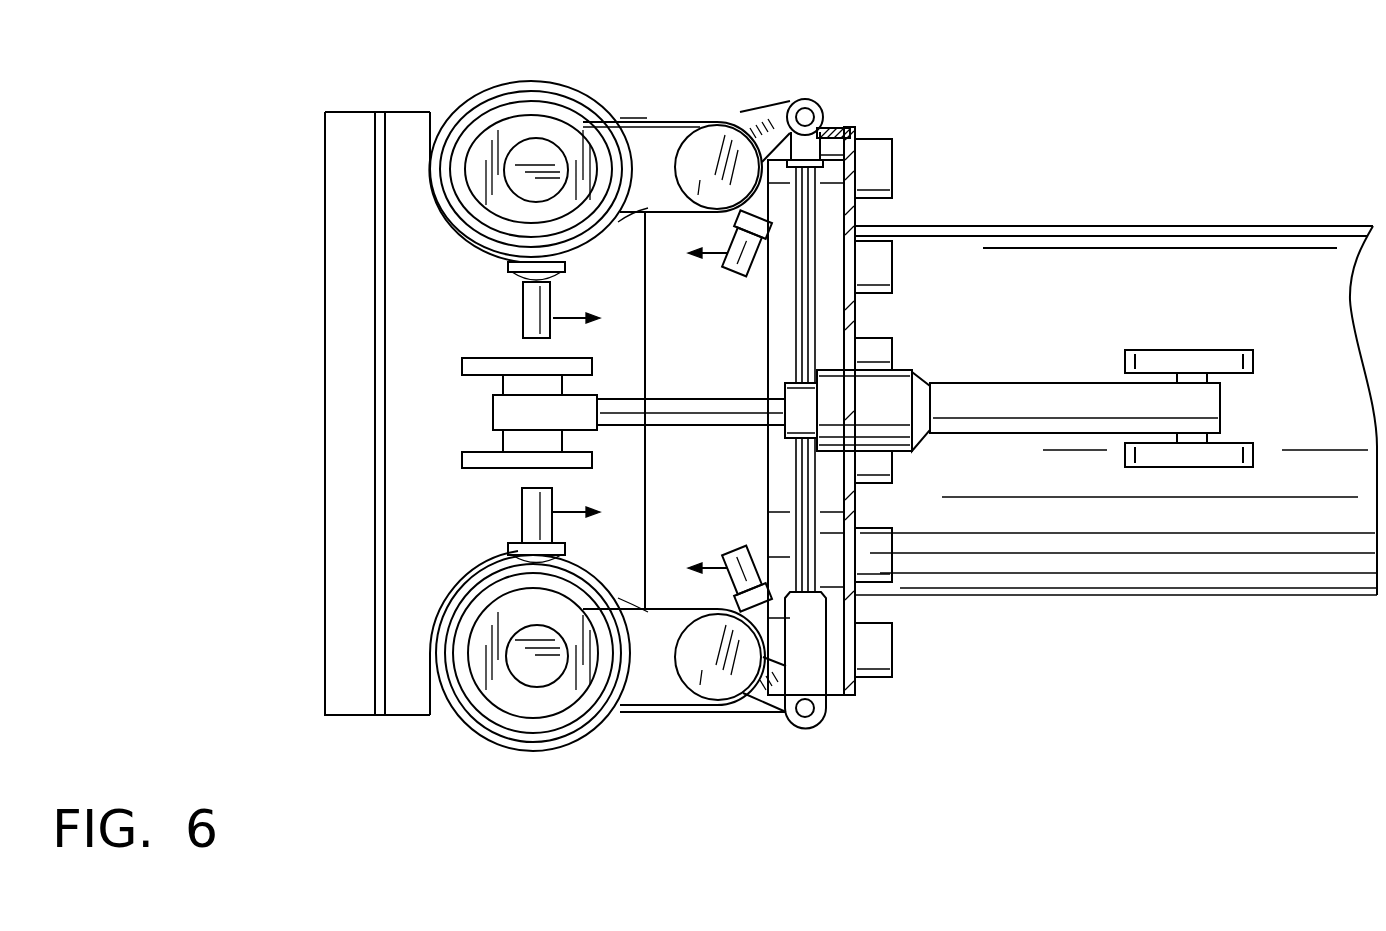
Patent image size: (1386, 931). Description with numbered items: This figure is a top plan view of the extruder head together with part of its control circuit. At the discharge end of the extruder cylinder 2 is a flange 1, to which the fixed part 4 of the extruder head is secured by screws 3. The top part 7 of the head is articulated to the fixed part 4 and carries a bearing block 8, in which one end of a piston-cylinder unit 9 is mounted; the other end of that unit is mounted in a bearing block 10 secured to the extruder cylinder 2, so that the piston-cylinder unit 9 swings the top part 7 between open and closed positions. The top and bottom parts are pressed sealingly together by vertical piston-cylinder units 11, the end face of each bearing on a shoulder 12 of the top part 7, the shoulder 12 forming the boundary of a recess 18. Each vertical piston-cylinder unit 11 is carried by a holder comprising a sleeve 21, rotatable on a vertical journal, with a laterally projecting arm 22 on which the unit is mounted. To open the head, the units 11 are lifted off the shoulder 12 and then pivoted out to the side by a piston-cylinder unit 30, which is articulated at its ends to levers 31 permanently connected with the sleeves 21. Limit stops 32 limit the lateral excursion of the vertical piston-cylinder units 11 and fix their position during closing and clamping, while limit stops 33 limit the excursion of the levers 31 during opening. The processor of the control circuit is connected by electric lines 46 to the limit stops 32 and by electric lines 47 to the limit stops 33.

The flange 1 is at (850, 148).
The extruder cylinder 2 is at (1152, 580).
The screws 3 is at (880, 184).
The fixed part 4 is at (740, 493).
The top part 7 is at (407, 560).
The bearing block 8 is at (473, 457).
The piston-cylinder unit 9 is at (1020, 428).
The bearing block 10 is at (1253, 355).
The vertical piston-cylinder unit 11 is at (530, 105).
The shoulder 12 is at (445, 115).
The recess 18 is at (430, 182).
The sleeve 21 is at (708, 130).
The arm 22 is at (663, 132).
The piston-cylinder unit 30 is at (800, 452).
The lever 31 is at (773, 123).
The limit stop 32 is at (533, 318).
The limit stop 33 is at (738, 273).
The electric lines 46 is at (594, 415).
The electric lines 47 is at (687, 412).